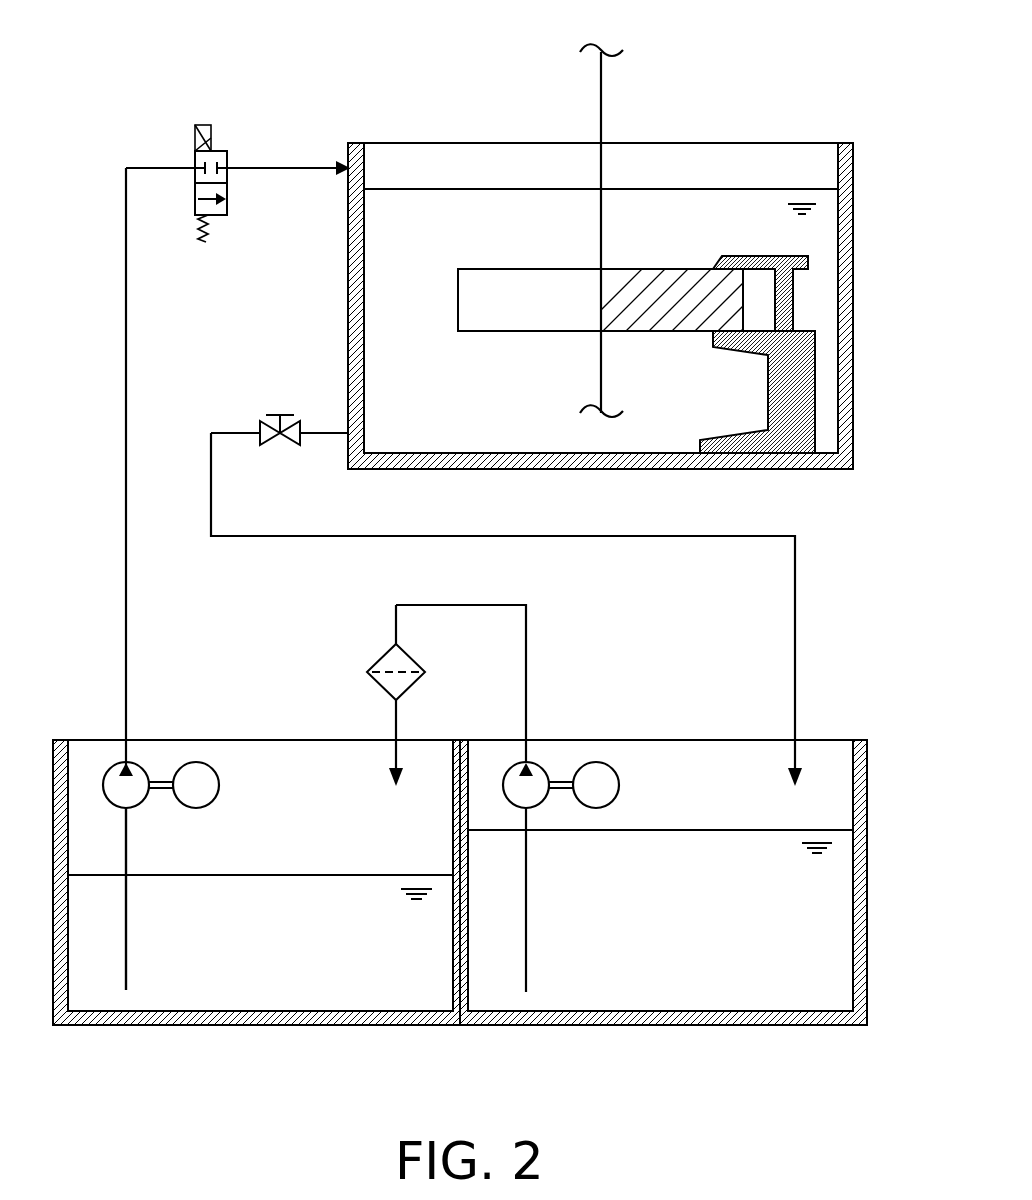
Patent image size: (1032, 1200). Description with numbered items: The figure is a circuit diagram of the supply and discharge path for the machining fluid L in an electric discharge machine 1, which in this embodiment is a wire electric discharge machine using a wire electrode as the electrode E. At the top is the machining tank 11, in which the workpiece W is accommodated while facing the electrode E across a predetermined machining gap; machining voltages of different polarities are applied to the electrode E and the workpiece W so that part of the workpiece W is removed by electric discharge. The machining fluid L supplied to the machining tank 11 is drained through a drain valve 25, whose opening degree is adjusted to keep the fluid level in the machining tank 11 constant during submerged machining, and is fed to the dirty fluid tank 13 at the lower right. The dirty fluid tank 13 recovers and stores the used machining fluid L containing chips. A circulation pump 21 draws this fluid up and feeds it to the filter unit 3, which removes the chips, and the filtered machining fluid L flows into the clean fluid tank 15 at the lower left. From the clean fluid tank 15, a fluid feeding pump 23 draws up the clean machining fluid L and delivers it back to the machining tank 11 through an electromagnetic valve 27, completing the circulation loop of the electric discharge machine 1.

The electric discharge machine 1 is at (121, 95).
The filter unit 3 is at (385, 648).
The machining tank 11 is at (351, 141).
The dirty fluid tank 13 is at (868, 757).
The clean fluid tank 15 is at (58, 742).
The circulation pump 21 is at (548, 766).
The fluid feeding pump 23 is at (148, 768).
The drain valve 25 is at (268, 412).
The electromagnetic valve 27 is at (228, 158).
The electrode E is at (603, 110).
The machining fluid L is at (754, 203).
The workpiece W is at (473, 285).